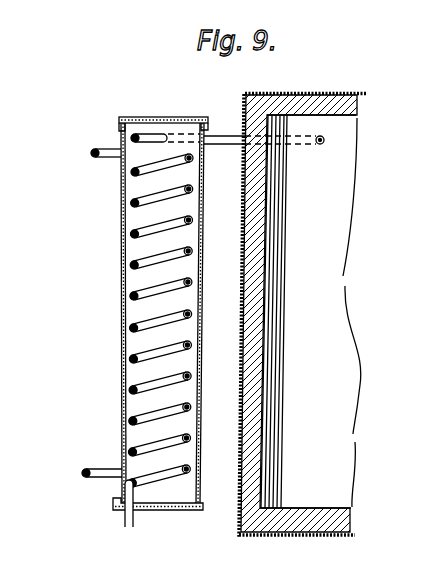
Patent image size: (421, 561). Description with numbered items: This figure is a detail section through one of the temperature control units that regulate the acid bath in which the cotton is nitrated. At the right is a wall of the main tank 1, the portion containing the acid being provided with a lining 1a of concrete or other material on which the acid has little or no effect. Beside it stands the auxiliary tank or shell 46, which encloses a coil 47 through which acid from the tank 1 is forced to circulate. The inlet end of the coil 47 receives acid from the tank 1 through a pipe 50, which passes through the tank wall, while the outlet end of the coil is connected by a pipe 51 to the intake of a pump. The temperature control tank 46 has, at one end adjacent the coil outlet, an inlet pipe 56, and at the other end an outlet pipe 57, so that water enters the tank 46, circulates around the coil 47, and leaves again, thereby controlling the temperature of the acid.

The tank 1 is at (307, 95).
The lining 1a is at (350, 95).
The auxiliary tank or shell 46 is at (121, 273).
The coil 47 is at (126, 300).
The pipe 50 is at (224, 141).
The pipe 51 is at (132, 527).
The inlet pipe 56 is at (83, 471).
The outlet pipe 57 is at (91, 152).